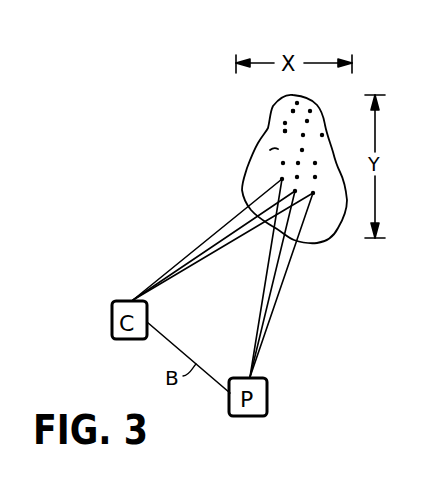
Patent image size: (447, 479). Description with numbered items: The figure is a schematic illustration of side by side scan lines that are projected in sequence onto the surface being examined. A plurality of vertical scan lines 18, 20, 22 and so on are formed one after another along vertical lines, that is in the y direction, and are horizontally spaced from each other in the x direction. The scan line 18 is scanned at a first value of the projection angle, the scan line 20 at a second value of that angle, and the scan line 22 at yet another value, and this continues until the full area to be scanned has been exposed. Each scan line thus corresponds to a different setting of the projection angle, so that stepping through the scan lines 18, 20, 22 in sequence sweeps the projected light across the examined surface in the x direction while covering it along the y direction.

The vertical scan line 18 is at (318, 150).
The vertical scan line 20 is at (307, 121).
The vertical scan line 22 is at (262, 140).